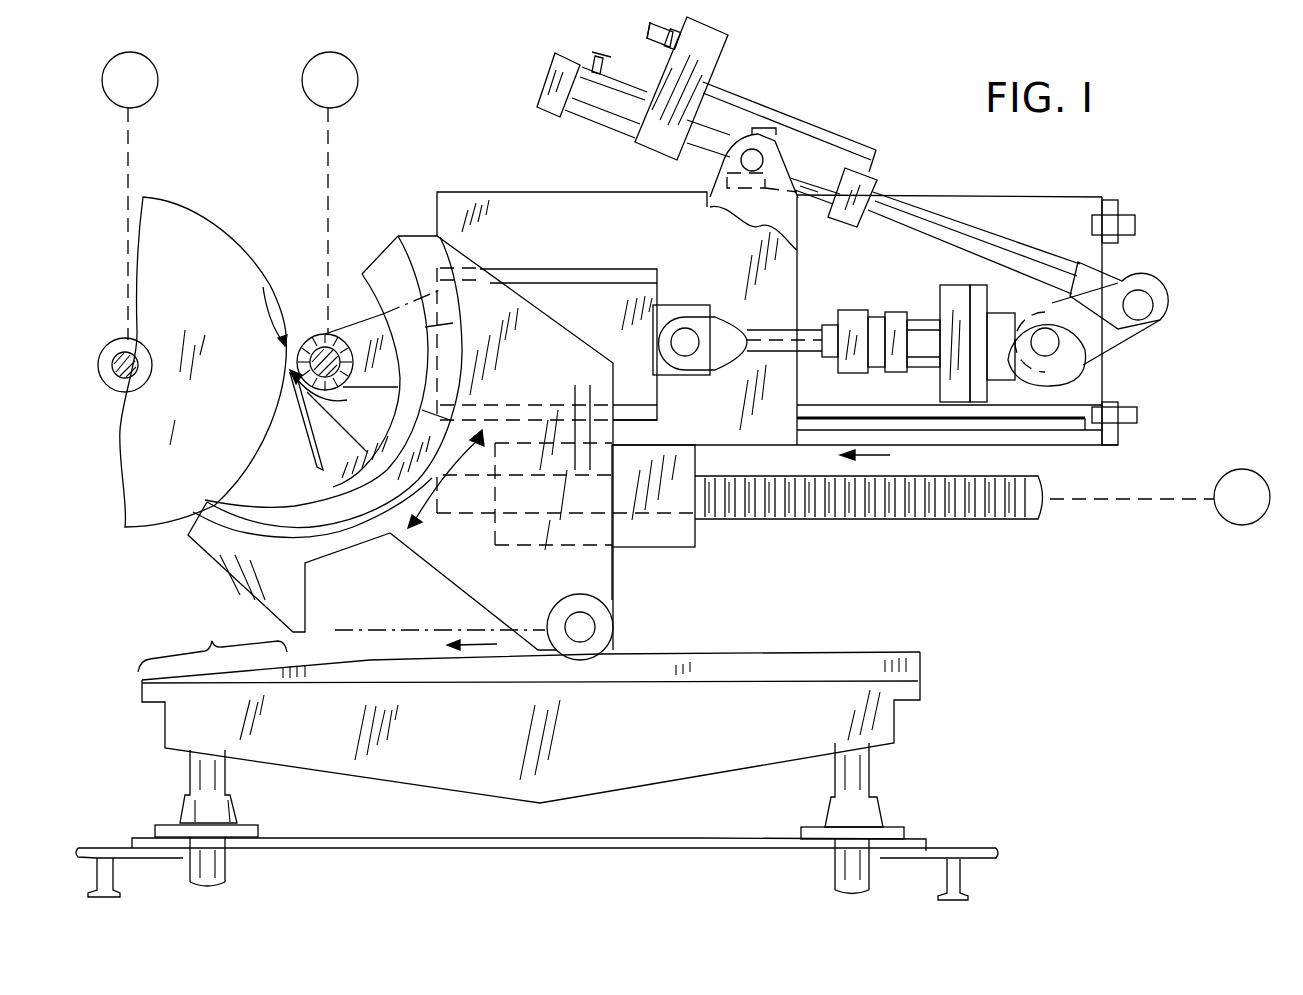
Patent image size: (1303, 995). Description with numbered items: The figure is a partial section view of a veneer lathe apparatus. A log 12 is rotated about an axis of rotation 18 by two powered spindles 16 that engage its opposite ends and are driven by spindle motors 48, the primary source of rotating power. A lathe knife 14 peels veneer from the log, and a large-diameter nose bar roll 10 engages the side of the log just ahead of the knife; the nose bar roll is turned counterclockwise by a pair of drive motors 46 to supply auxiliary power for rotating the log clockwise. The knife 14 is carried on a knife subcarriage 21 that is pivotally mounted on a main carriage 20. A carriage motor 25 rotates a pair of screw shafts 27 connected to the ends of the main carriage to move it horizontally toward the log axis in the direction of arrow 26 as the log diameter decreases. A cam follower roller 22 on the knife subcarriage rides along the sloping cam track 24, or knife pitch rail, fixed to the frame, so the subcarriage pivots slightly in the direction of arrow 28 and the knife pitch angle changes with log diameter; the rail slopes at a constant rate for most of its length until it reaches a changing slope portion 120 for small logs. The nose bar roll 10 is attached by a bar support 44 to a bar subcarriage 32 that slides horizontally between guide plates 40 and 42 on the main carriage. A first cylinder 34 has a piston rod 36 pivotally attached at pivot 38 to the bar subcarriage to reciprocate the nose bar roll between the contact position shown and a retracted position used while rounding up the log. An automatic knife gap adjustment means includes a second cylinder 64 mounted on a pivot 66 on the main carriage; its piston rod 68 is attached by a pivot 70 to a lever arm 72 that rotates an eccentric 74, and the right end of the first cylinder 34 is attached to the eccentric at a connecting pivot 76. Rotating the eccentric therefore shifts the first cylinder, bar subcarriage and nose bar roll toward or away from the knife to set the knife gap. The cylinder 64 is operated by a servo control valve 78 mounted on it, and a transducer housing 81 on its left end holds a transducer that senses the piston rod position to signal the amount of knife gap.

The nose bar roll 10 is at (312, 335).
The log 12 is at (248, 243).
The lathe knife 14 is at (300, 420).
The powered spindles 16 is at (112, 348).
The axis of rotation 18 is at (110, 378).
The main carriage 20 is at (672, 546).
The knife subcarriage 21 is at (612, 570).
The cam follower roller 22 is at (606, 616).
The cam track 24 is at (742, 655).
The carriage motor 25 is at (1240, 469).
The arrow 26 is at (884, 457).
The screw shafts 27 is at (838, 522).
The arrow 28 is at (442, 518).
The bar subcarriage 32 is at (601, 298).
The first cylinder 34 is at (895, 318).
The piston rod 36 is at (778, 330).
The pivot 38 is at (686, 330).
The guide plate 40 is at (540, 278).
The guide plate 42 is at (633, 418).
The bar support 44 is at (362, 318).
The drive motors 46 is at (302, 76).
The spindle motors 48 is at (158, 74).
The second cylinder 64 is at (822, 135).
The pivot 66 is at (755, 150).
The piston rod 68 is at (940, 210).
The pivot 70 is at (1140, 300).
The lever arm 72 is at (1118, 345).
The eccentric 74 is at (1052, 388).
The connecting pivot 76 is at (1040, 333).
The servo control valve 78 is at (712, 60).
The transducer housing 81 is at (620, 114).
The changing slope portion 120 is at (212, 642).